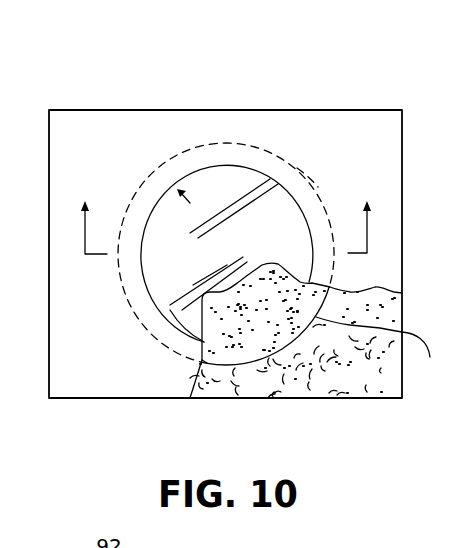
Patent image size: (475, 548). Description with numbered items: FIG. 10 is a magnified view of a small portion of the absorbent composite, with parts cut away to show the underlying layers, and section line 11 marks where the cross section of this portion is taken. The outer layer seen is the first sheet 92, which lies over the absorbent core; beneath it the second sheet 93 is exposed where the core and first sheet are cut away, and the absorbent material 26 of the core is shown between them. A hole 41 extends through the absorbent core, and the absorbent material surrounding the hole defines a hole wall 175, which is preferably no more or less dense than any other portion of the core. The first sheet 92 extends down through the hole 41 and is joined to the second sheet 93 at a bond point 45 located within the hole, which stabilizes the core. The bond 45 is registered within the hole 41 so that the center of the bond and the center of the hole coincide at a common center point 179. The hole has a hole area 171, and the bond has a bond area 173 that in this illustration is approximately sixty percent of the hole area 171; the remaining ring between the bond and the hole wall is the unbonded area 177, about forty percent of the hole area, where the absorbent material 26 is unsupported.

The first sheet 92 is at (93, 120).
The holes 41 is at (240, 141).
The hole area 171 is at (297, 168).
The unbonded area 177 is at (156, 158).
The bond points 45 is at (248, 183).
The common center point 179 is at (219, 254).
The cross sectional view line 11 is at (226, 215).
The bond area 173 is at (188, 304).
The second sheet 93 is at (270, 327).
The hole wall 175 is at (385, 340).
The absorbent material 26 is at (353, 377).